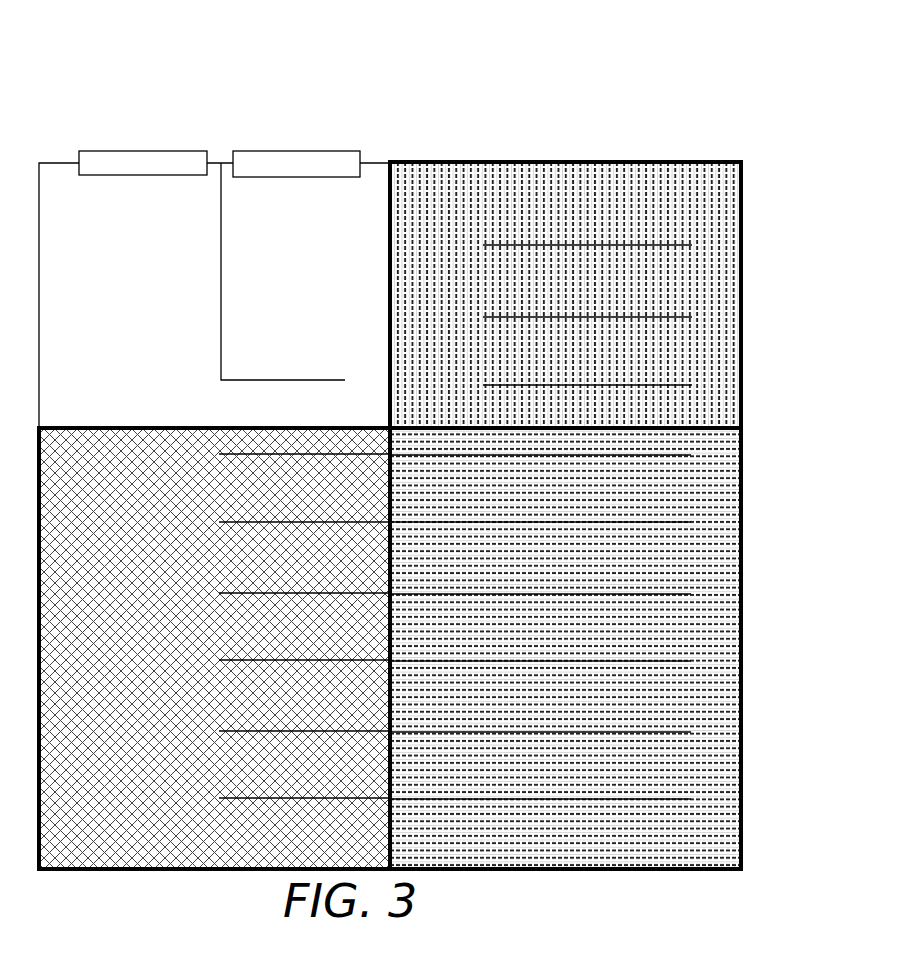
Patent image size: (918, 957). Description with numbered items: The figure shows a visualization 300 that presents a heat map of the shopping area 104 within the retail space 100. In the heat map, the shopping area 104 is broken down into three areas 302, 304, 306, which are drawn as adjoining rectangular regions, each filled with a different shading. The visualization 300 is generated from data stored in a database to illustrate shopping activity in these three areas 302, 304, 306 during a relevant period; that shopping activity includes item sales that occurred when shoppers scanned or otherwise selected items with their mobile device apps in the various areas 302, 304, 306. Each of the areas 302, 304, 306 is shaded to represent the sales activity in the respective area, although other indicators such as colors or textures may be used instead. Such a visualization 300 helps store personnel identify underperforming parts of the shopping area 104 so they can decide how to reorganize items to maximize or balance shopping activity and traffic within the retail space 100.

The visualization 300 is at (372, 55).
The retail space 100 is at (673, 160).
The shopping area 104 is at (659, 277).
The area 302 is at (502, 309).
The area 304 is at (582, 639).
The area 306 is at (195, 638).